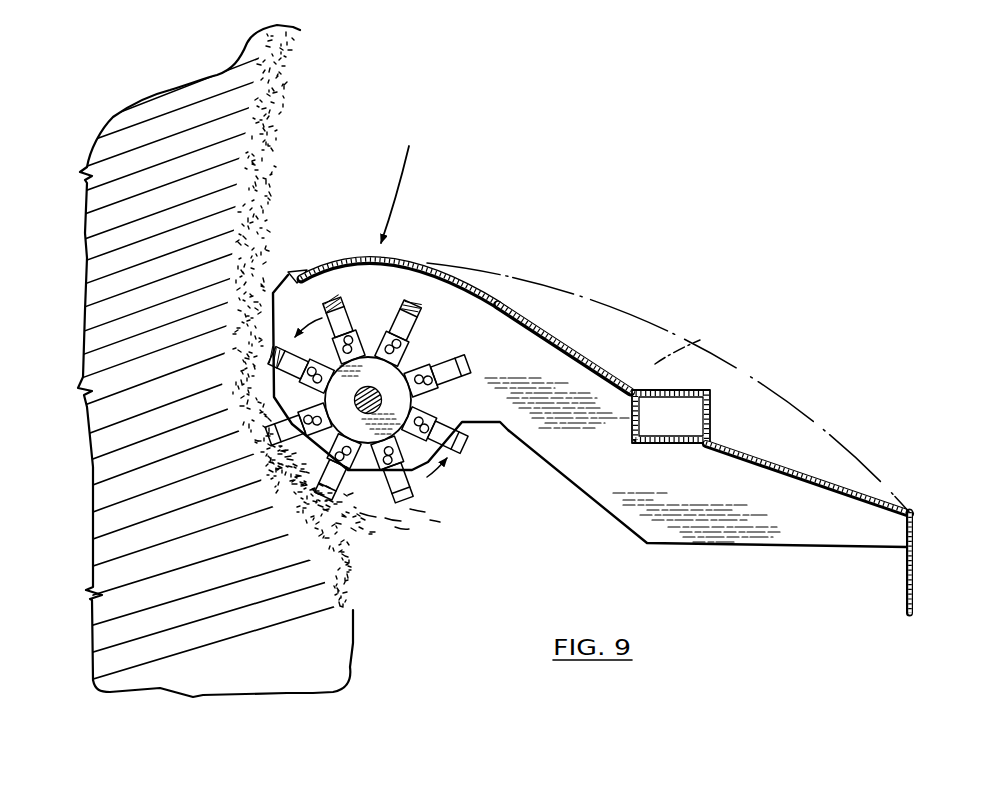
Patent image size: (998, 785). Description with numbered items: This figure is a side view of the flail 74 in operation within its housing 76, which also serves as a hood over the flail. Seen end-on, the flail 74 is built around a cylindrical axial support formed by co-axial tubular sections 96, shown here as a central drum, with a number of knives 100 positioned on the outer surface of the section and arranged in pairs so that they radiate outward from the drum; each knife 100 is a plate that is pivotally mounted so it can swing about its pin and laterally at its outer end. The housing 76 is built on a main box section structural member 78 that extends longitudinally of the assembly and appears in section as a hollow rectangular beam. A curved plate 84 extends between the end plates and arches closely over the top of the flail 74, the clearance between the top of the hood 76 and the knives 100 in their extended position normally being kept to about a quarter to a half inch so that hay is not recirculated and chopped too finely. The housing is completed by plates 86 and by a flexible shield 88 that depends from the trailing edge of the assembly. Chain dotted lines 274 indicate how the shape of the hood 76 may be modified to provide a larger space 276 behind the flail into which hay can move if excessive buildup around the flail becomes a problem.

The flail 74 is at (445, 330).
The housing 76 is at (438, 267).
The main box section structural member 78 is at (711, 416).
The curved plate 84 is at (553, 336).
The plates 86 is at (834, 492).
The flexible shield 88 is at (914, 585).
The tubular sections 96 is at (367, 447).
The knives 100 is at (388, 315).
The chain dotted lines 274 is at (607, 300).
The larger space 276 is at (685, 343).